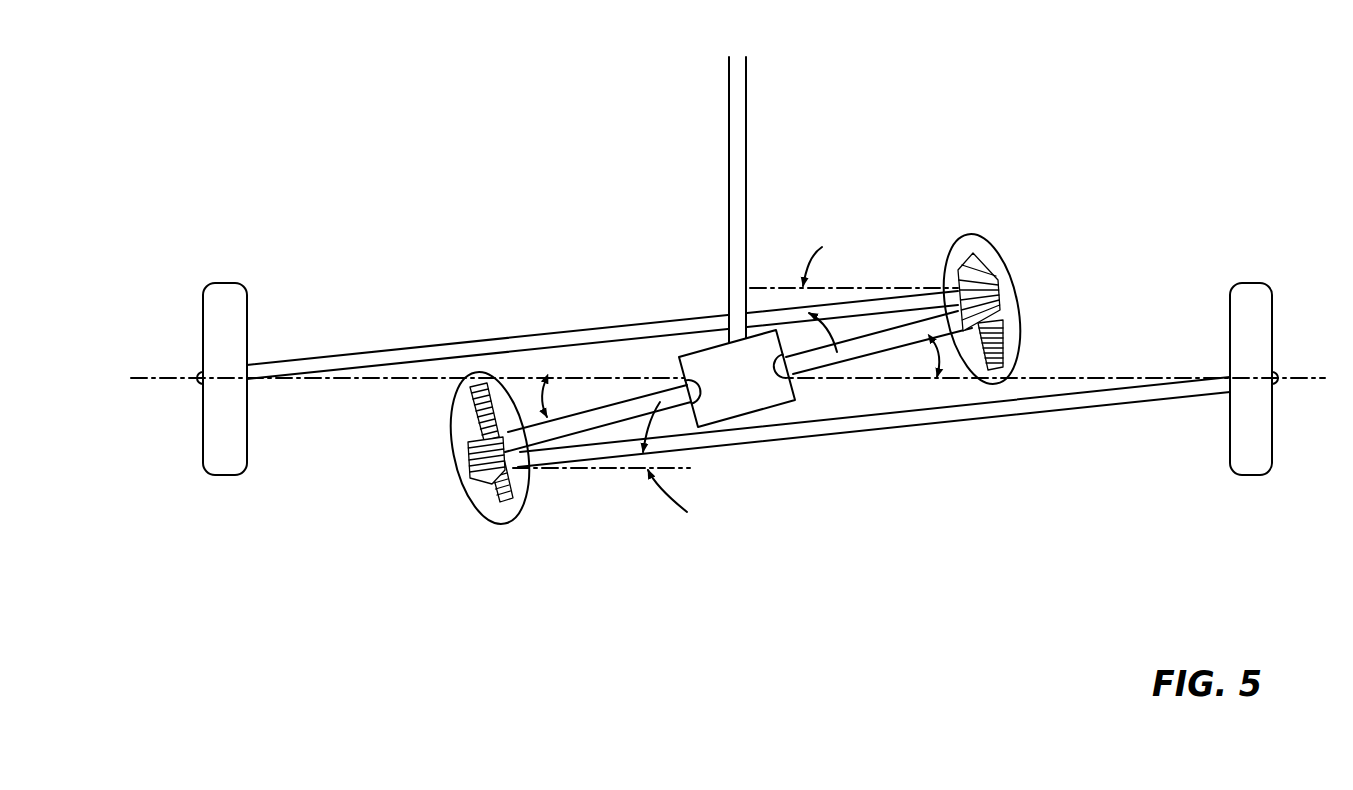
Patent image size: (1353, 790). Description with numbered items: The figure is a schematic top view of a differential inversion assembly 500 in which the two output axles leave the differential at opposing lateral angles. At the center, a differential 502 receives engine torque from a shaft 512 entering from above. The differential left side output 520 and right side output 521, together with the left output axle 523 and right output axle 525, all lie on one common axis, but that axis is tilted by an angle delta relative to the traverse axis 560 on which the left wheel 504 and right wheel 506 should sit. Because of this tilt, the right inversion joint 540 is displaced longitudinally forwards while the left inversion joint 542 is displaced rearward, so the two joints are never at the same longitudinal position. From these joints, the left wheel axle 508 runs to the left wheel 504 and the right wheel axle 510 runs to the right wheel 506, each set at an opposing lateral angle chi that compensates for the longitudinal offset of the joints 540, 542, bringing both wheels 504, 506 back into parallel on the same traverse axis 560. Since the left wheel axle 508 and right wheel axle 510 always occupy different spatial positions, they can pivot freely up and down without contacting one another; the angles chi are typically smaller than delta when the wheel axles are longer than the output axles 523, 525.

The differential inversion assembly 500 is at (358, 125).
The differential 502 is at (684, 355).
The left wheel 504 is at (222, 283).
The right wheel 506 is at (1246, 283).
The left wheel axle 508 is at (546, 334).
The right wheel axle 510 is at (1093, 408).
The shaft 512 is at (747, 138).
The differential left side output 520 is at (710, 425).
The right side output 521 is at (798, 405).
The left output axle 523 is at (575, 432).
The right output axle 525 is at (898, 318).
The right inversion joint 540 is at (1003, 248).
The left inversion joint 542 is at (480, 521).
The traverse axis 560 is at (706, 381).